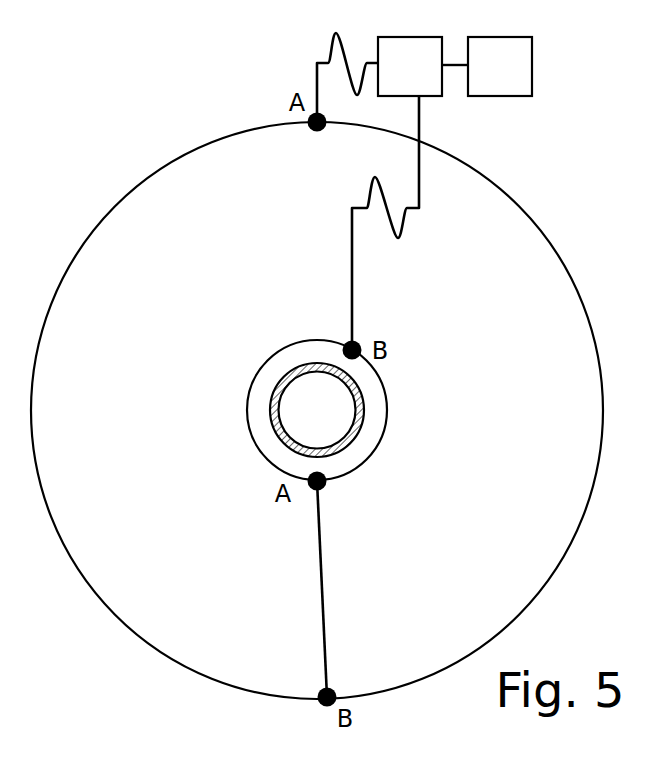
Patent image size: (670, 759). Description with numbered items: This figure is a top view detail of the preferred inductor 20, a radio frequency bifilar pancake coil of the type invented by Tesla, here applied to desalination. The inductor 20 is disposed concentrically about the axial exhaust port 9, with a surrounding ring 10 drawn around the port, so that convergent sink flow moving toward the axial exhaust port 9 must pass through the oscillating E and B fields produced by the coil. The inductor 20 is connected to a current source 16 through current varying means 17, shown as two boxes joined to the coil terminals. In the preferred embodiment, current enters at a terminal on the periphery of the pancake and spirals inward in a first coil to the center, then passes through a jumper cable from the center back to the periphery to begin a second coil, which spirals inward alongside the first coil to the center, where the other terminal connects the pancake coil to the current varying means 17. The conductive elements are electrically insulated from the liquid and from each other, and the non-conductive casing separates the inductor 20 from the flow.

The axial exhaust port 9 is at (317, 410).
The outer ring / insulating sleeve 10 is at (277, 437).
The current source 16 is at (500, 66).
The current varying means 17 is at (410, 66).
The inductor 20 is at (288, 263).